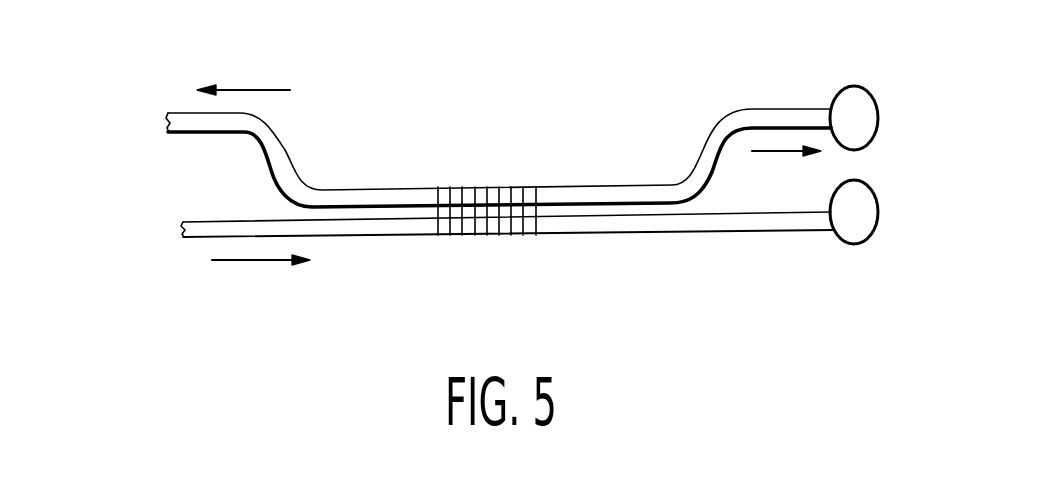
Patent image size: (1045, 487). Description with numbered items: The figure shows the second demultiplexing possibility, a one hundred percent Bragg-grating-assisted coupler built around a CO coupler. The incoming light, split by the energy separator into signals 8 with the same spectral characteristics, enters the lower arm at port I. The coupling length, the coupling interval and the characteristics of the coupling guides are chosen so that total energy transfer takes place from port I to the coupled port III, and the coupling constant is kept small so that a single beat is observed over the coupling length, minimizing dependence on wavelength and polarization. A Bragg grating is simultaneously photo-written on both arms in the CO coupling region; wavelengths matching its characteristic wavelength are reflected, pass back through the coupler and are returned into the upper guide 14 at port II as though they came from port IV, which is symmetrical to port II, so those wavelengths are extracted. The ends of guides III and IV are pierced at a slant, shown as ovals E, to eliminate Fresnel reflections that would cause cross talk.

The guide 14 is at (167, 120).
The signals 8 is at (182, 230).
The coupler CO is at (598, 158).
The ovals E is at (873, 103).
The port I is at (177, 333).
The port II is at (332, 92).
The coupled port III is at (786, 26).
The port IV is at (765, 310).